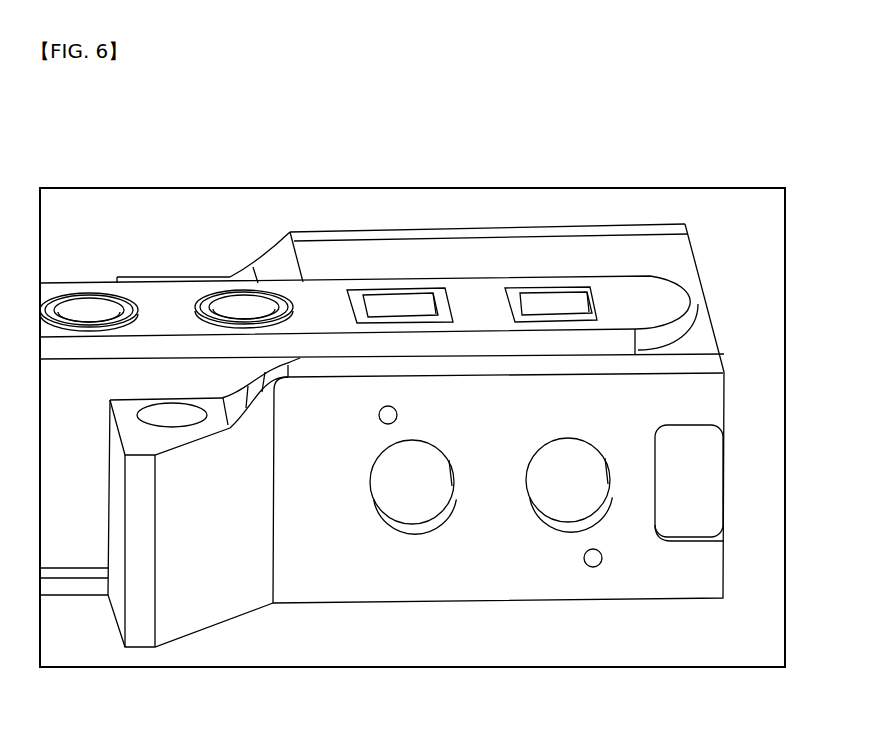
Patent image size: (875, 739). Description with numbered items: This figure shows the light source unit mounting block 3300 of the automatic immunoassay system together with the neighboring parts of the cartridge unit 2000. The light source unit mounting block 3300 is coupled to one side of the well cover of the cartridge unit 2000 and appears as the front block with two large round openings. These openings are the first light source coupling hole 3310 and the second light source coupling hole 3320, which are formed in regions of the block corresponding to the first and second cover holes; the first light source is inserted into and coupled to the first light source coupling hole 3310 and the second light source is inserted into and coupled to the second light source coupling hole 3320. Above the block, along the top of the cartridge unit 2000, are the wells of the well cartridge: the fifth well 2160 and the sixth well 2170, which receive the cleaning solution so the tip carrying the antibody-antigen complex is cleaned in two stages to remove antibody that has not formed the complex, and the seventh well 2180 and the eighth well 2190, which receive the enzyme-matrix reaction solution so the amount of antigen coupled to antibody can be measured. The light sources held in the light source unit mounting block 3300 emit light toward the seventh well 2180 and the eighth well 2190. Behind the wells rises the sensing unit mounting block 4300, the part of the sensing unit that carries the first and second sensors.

The cartridge unit 2000 is at (645, 302).
The fifth well 2160 is at (88, 308).
The sixth well 2170 is at (243, 307).
The seventh well 2180 is at (395, 305).
The eighth well 2190 is at (557, 302).
The sensing unit mounting block 4300 is at (642, 257).
The light source unit mounting block 3300 is at (682, 407).
The first light source coupling hole 3310 is at (412, 487).
The second light source coupling hole 3320 is at (567, 485).